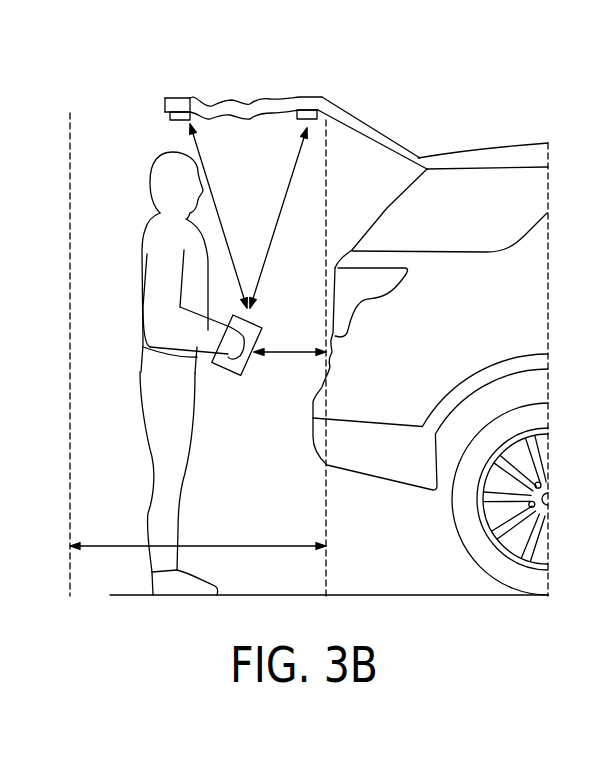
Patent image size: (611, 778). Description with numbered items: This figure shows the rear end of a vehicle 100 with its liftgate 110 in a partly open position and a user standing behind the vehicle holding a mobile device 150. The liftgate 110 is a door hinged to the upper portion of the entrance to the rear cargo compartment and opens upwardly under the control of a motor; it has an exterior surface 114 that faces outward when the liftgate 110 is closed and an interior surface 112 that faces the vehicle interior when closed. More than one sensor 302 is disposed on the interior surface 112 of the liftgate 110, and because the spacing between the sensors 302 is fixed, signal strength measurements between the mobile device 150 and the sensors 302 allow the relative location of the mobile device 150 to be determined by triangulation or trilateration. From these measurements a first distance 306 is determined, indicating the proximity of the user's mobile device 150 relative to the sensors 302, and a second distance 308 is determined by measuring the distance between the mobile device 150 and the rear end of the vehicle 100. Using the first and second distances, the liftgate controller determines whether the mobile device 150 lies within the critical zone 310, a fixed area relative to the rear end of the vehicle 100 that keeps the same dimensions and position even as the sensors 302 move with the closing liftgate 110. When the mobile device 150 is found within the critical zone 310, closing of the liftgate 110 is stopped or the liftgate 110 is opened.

The vehicle 100 is at (503, 142).
The liftgate 110 is at (296, 116).
The interior surface 112 is at (386, 150).
The exterior surface 114 is at (385, 137).
The mobile device 150 is at (223, 372).
The sensors 302 is at (170, 117).
The first distance 306 is at (234, 262).
The second distance 308 is at (287, 350).
The critical zone 310 is at (243, 545).